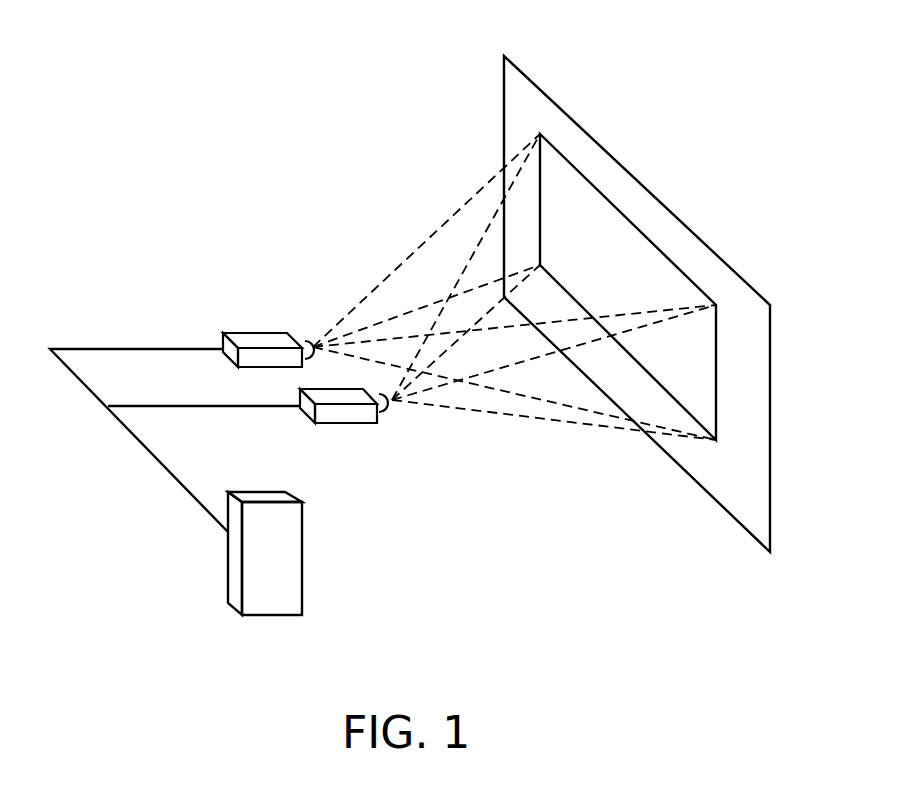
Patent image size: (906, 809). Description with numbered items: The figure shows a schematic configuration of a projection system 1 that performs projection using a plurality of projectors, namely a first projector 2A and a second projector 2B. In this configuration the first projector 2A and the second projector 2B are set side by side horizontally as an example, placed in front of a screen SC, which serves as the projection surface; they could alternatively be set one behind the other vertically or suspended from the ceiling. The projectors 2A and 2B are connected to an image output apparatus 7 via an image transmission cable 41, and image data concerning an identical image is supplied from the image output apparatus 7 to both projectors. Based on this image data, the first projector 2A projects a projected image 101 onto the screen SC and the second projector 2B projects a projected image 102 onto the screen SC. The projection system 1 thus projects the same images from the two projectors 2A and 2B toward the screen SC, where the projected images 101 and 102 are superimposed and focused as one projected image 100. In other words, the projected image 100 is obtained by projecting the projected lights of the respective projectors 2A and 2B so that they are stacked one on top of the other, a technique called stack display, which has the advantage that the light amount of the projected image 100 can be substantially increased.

The projection system 1 is at (316, 183).
The first projector 2A is at (272, 340).
The second projector 2B is at (326, 401).
The image output apparatus 7 is at (304, 562).
The image transmission cable 41 is at (96, 400).
The projected image 100 is at (672, 252).
The projected image 101 is at (442, 263).
The projected image 102 is at (495, 407).
The screen SC is at (552, 98).